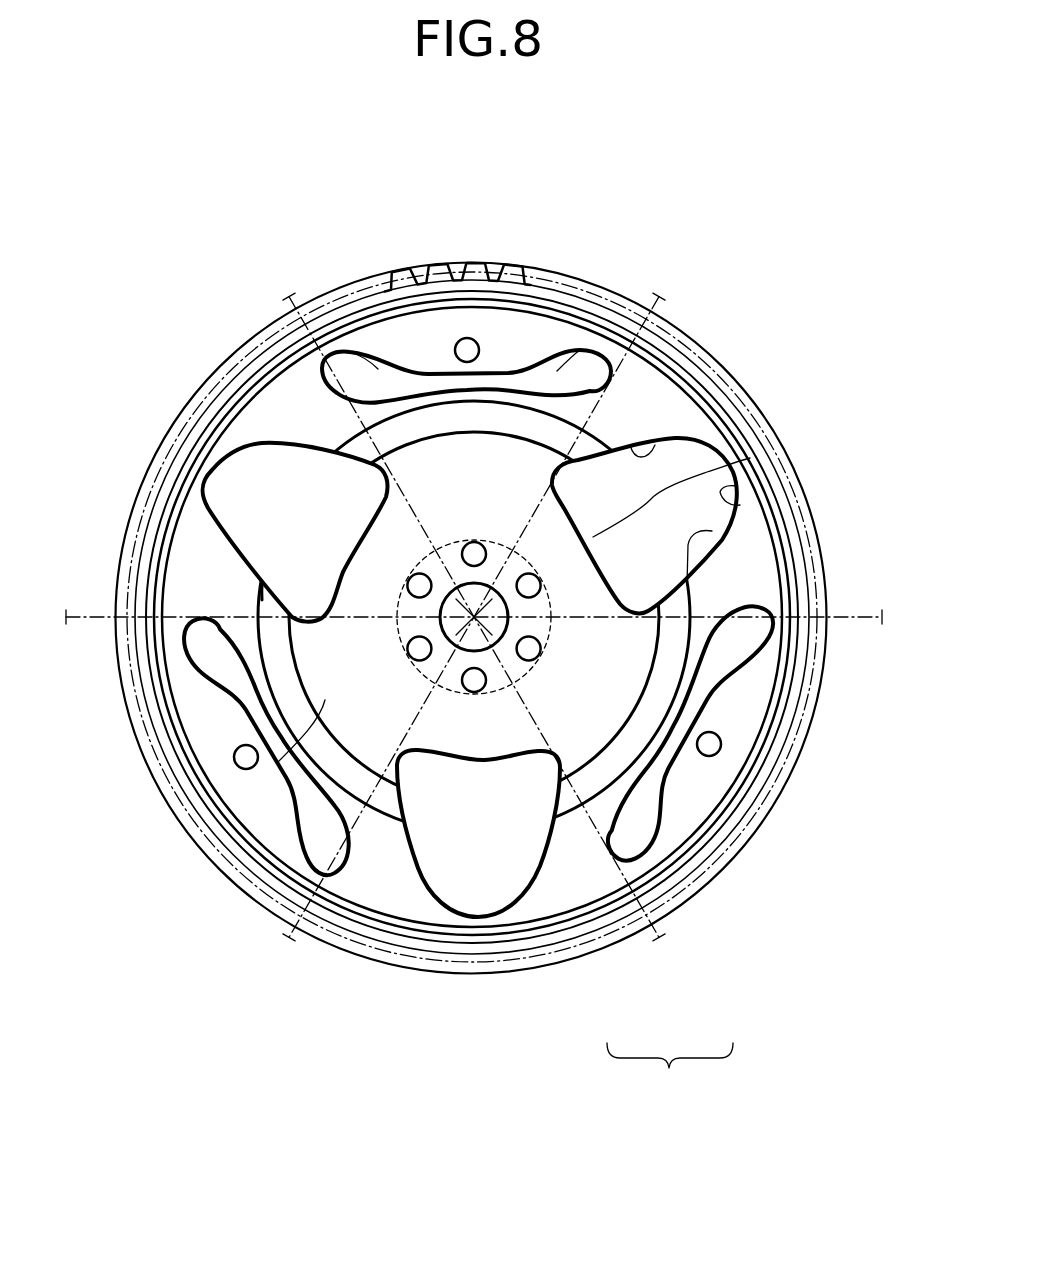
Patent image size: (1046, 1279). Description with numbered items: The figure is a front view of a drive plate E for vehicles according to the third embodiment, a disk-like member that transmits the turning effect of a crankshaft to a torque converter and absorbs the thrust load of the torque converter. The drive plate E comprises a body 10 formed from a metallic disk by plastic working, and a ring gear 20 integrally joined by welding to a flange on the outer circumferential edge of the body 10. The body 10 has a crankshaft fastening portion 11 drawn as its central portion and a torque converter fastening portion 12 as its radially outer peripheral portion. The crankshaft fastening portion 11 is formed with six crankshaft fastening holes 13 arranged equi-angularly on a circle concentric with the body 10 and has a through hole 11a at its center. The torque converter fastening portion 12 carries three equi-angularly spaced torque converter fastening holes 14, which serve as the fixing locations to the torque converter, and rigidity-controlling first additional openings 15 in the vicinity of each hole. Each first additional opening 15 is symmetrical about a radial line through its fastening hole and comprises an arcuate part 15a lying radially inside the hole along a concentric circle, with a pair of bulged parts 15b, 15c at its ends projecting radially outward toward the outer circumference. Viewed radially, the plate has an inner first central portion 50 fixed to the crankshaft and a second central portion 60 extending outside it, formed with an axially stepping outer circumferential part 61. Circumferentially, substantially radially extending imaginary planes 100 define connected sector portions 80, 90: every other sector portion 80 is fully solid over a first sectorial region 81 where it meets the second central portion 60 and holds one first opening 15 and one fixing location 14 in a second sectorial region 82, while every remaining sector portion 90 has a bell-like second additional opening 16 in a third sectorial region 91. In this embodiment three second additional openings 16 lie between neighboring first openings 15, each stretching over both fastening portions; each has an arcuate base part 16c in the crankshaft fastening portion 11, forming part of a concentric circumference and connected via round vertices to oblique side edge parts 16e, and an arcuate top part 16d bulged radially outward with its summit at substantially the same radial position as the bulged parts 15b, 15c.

The body 10 is at (670, 1076).
The crankshaft fastening portion 11 is at (580, 745).
The through hole 11a is at (490, 637).
The torque converter fastening portion 12 is at (583, 745).
The crankshaft fastening holes 13 is at (481, 545).
The torque converter fastening holes 14 is at (480, 350).
The rigidity-controlling first additional openings 15 is at (558, 364).
The arcuate part 15a is at (277, 763).
The bulged part 15b is at (361, 351).
The bulged part 15c is at (612, 345).
The rigidity-controlling second additional openings 16 is at (213, 502).
The arcuate base part 16c is at (750, 458).
The arcuate top part 16d is at (740, 505).
The oblique side edge parts 16e is at (657, 435).
The ring gear 20 is at (488, 262).
The first central portion 50 is at (400, 630).
The second central portion 60 is at (262, 600).
The axially stepping outer circumferential part 61 is at (348, 446).
The connected sector portion 80 is at (398, 278).
The first sectorial region 81 is at (352, 724).
The second sectorial region 82 is at (247, 826).
The connected sector portion 90 is at (827, 575).
The third sectorial region 91 is at (247, 431).
The imaginary planes 100 is at (268, 311).
The drive plate E is at (232, 278).